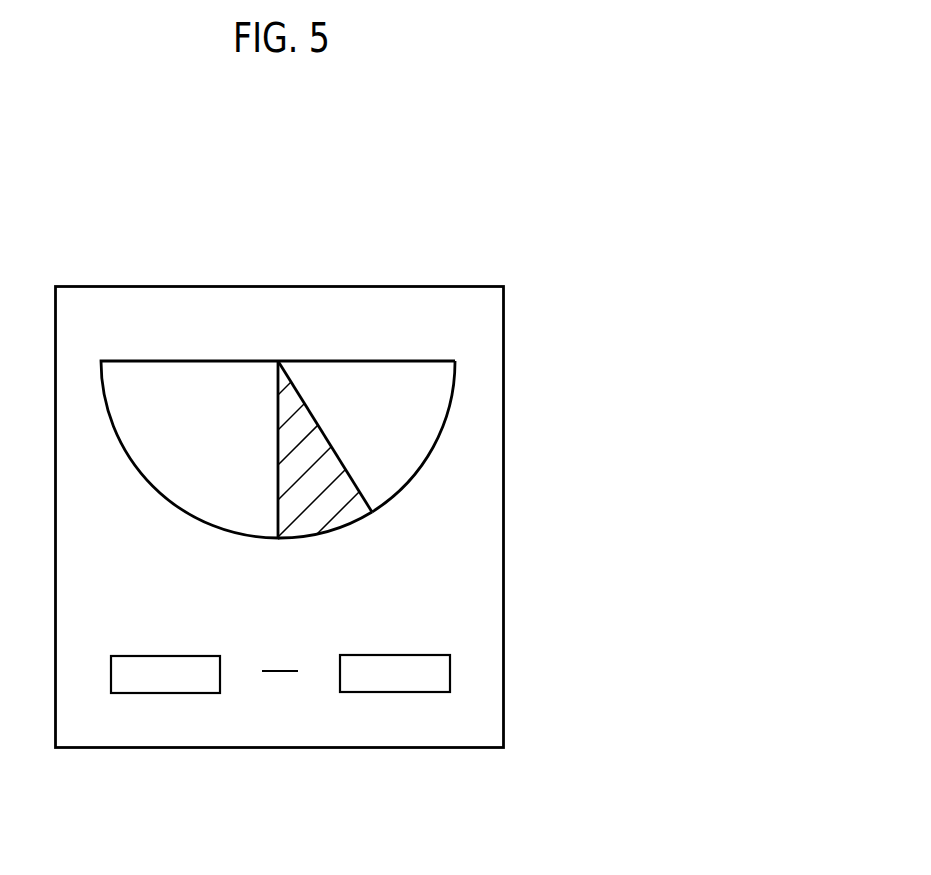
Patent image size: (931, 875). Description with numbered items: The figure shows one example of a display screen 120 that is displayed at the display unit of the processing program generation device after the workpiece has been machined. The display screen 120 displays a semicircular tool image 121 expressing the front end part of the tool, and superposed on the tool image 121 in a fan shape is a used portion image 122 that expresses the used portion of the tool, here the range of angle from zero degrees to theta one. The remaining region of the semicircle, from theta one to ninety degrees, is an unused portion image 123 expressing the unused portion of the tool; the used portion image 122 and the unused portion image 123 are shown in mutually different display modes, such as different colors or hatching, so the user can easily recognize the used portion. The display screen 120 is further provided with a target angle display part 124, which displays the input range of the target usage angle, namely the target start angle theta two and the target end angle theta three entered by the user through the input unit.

The display screen 120 is at (488, 226).
The tool image 121 is at (376, 339).
The used portion image 122 is at (322, 482).
The unused portion image 123 is at (427, 416).
The target angle display part 124 is at (203, 693).